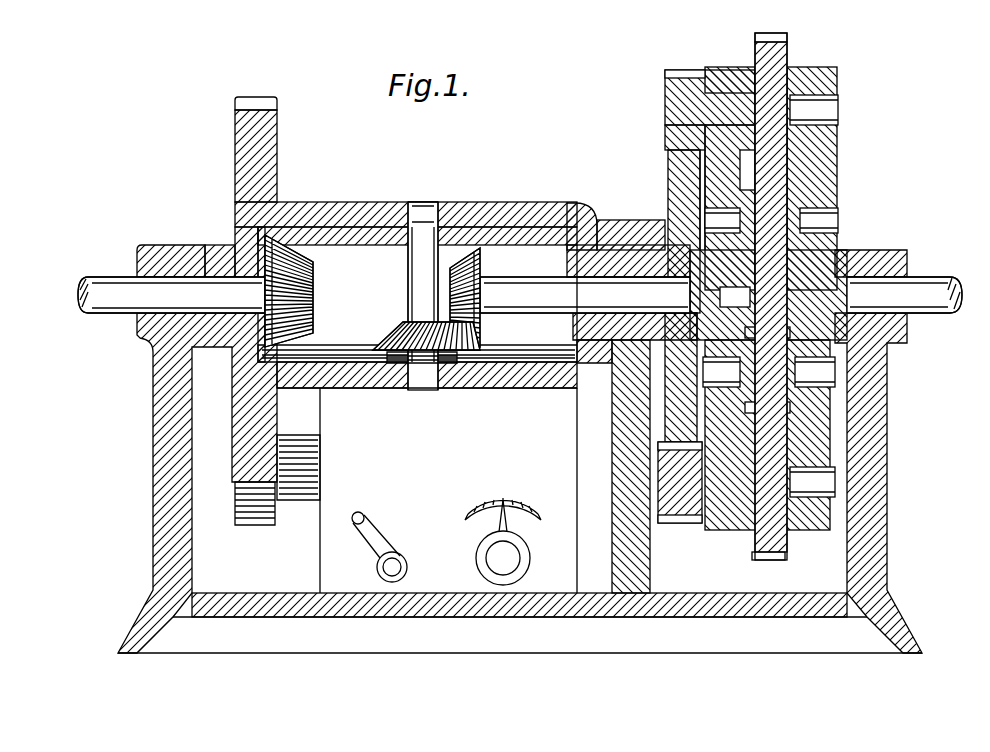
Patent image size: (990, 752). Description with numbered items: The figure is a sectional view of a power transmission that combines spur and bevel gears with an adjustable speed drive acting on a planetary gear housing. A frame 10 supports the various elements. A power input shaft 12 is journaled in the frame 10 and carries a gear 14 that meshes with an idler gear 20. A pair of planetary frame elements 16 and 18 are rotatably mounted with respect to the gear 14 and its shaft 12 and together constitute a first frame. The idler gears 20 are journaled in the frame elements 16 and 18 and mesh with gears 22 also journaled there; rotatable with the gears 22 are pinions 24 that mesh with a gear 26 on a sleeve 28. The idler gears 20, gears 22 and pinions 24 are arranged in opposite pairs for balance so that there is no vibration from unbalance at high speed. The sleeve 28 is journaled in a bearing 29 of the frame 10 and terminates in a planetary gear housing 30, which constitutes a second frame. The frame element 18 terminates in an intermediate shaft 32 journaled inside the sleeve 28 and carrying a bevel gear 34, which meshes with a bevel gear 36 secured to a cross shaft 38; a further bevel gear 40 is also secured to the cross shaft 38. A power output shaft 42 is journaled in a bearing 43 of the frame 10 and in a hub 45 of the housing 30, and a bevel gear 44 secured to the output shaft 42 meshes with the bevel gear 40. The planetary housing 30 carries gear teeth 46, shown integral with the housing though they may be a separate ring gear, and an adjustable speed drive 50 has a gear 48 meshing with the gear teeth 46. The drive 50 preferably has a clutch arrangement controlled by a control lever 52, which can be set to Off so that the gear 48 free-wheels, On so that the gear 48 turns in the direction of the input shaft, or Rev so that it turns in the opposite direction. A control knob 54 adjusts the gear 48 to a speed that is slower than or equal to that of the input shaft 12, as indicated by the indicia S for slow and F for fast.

The frame 10 is at (160, 565).
The power input shaft 12 is at (940, 288).
The gear 14 is at (805, 258).
The planetary frame element 16 is at (822, 153).
The planetary frame element 18 is at (712, 165).
The idler gear 20 is at (790, 196).
The gear 22 is at (780, 58).
The pinion 24 is at (676, 70).
The gear 26 is at (672, 193).
The sleeve 28 is at (644, 242).
The bearing 29 is at (592, 215).
The planetary gear housing 30 is at (490, 212).
The intermediate shaft 32 is at (585, 295).
The bevel gear 34 is at (482, 299).
The bevel gear 36 is at (396, 338).
The cross shaft 38 is at (408, 280).
The bevel gear 40 is at (512, 236).
The power output shaft 42 is at (124, 300).
The bearing 43 is at (165, 255).
The bevel gear 44 is at (300, 322).
The hub 45 is at (220, 258).
The gear teeth 46 is at (262, 104).
The gear 48 is at (252, 527).
The adjustable speed drive 50 is at (427, 490).
The control lever 52 is at (380, 535).
The control knob 54 is at (528, 556).